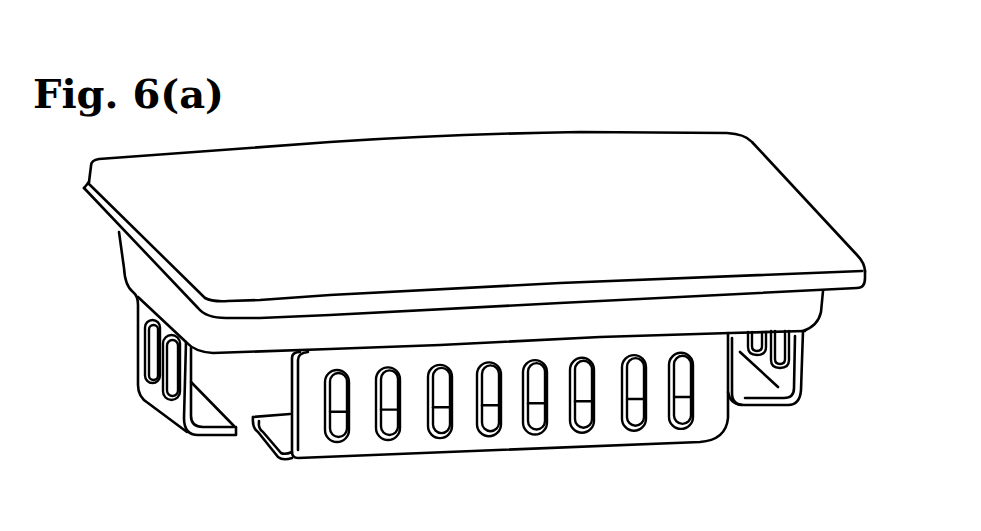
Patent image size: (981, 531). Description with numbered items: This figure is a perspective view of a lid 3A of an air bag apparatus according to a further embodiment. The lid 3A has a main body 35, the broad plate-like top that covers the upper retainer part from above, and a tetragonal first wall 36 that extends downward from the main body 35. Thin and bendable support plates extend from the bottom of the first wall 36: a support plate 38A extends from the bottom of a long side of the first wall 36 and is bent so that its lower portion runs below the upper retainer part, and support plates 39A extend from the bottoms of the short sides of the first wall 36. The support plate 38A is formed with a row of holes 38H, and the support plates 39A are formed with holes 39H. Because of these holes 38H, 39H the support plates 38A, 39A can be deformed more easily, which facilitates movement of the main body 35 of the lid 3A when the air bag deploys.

The lid 3A is at (624, 122).
The main body 35 is at (386, 148).
The first wall 36 is at (500, 317).
The support plate 38A is at (657, 432).
The hole 38H is at (388, 437).
The support plate 39A is at (153, 398).
The hole 39H is at (143, 357).